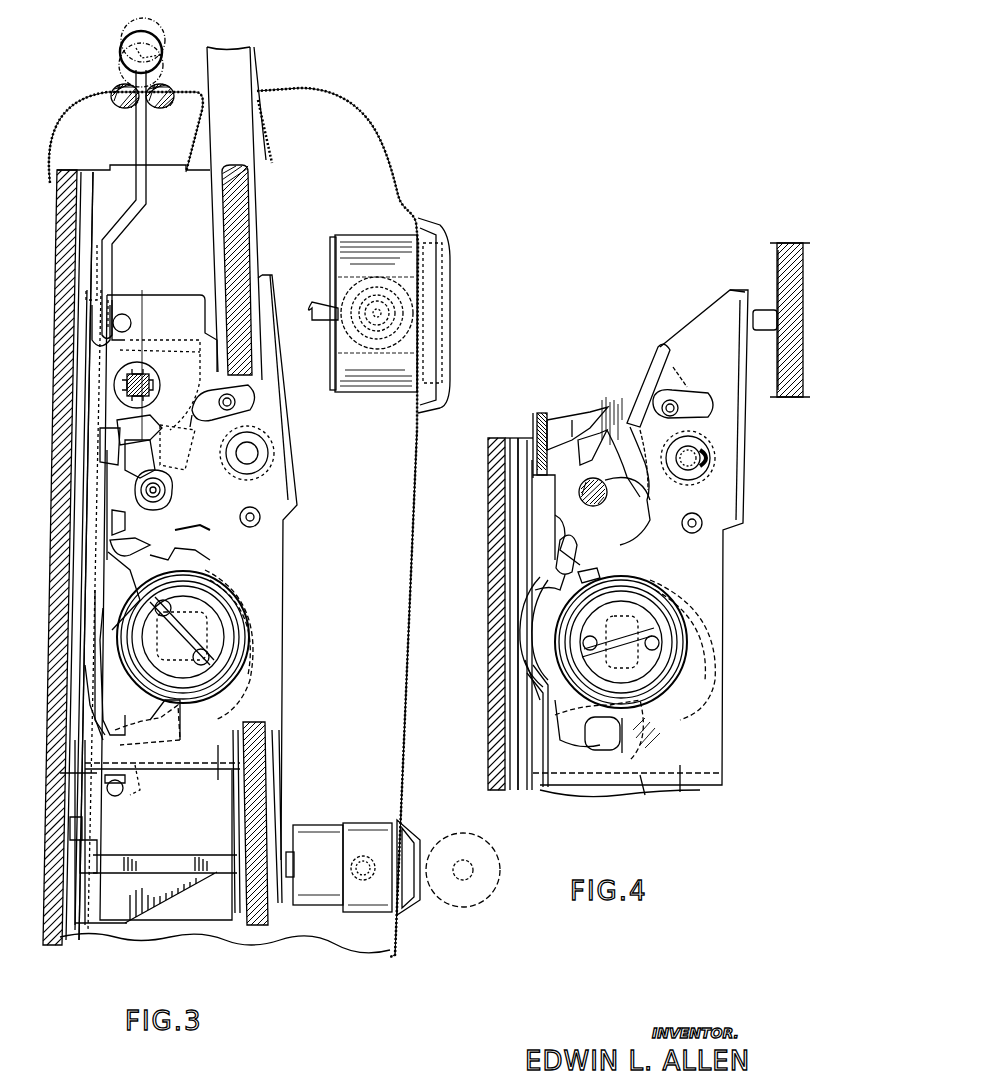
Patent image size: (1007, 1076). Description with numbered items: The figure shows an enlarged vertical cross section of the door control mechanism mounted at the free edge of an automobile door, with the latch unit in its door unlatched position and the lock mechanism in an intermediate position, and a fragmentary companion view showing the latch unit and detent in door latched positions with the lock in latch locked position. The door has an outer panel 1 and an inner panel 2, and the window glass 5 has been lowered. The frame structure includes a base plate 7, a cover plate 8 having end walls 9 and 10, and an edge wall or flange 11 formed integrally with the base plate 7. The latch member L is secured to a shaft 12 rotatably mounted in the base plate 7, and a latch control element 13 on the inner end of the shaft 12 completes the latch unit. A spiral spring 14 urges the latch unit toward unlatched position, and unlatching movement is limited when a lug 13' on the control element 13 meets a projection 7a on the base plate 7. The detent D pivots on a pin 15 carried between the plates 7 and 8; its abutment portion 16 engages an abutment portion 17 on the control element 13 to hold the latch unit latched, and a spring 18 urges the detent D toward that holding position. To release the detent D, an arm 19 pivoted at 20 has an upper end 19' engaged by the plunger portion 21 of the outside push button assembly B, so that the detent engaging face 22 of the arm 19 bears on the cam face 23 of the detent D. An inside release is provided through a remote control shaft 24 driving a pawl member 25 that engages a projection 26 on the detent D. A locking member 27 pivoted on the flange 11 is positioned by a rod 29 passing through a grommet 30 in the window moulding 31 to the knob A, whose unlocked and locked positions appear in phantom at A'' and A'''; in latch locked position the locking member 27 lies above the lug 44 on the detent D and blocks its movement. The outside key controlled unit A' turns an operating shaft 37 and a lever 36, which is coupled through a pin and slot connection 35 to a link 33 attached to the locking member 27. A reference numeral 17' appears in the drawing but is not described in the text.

In FIG. 3, the outer panel 1 is at (410, 695).
In FIG. 3, the inner panel 2 is at (62, 197).
In FIG. 3, the window glass 5 is at (250, 190).
In FIG. 3, the base plate 7 is at (150, 788).
In FIG. 4, the base plate 7 is at (655, 368).
In FIG. 3, the projection 7a is at (147, 722).
In FIG. 4, the projection 7a is at (599, 730).
In FIG. 3, the cover plate 8 is at (213, 774).
In FIG. 4, the cover plate 8 is at (680, 795).
In FIG. 3, the end wall 9 is at (170, 335).
In FIG. 3, the end wall 10 is at (145, 782).
In FIG. 4, the end wall 10 is at (658, 793).
In FIG. 3, the edge wall or flange 11 is at (80, 560).
In FIG. 4, the edge wall or flange 11 is at (520, 557).
In FIG. 3, the shaft 12 is at (196, 622).
In FIG. 4, the shaft 12 is at (630, 630).
In FIG. 3, the latch control element 13 is at (128, 628).
In FIG. 4, the latch control element 13 is at (566, 689).
In FIG. 3, the lug 13' is at (240, 645).
In FIG. 4, the lug 13' is at (695, 664).
In FIG. 3, the spiral spring 14 is at (180, 549).
In FIG. 4, the spiral spring 14 is at (539, 632).
In FIG. 3, the pin 15 is at (140, 490).
In FIG. 4, the pin 15 is at (579, 490).
In FIG. 3, the abutment portion 16 is at (143, 560).
In FIG. 4, the abutment portion 16 is at (578, 546).
In FIG. 3, the abutment portion 17 is at (188, 632).
In FIG. 4, the abutment portion 17 is at (621, 630).
In FIG. 3, the disc arm 17' is at (130, 535).
In FIG. 4, the disc arm 17' is at (513, 588).
In FIG. 3, the spring 18 is at (88, 686).
In FIG. 4, the spring 18 is at (527, 726).
In FIG. 3, the arm 19 is at (213, 597).
In FIG. 4, the arm 19 is at (658, 537).
In FIG. 3, the upper end of control arm 19' is at (281, 262).
In FIG. 4, the upper end of control arm 19' is at (745, 273).
In FIG. 3, the pivotal support 20 is at (262, 522).
In FIG. 4, the pivotal support 20 is at (720, 535).
In FIG. 3, the plunger portion 21 is at (312, 325).
In FIG. 4, the plunger portion 21 is at (763, 332).
In FIG. 3, the detent engaging face 22 is at (240, 474).
In FIG. 4, the detent engaging face 22 is at (660, 530).
In FIG. 3, the cam face 23 is at (190, 528).
In FIG. 4, the cam face 23 is at (640, 502).
In FIG. 3, the remote control shaft 24 is at (150, 372).
In FIG. 3, the pawl member 25 is at (117, 410).
In FIG. 4, the pawl member 25 is at (568, 418).
In FIG. 3, the projection 26 is at (135, 445).
In FIG. 4, the projection 26 is at (590, 433).
In FIG. 3, the locking or restraining member 27 is at (102, 436).
In FIG. 4, the locking or restraining member 27 is at (548, 420).
In FIG. 3, the rod 29 is at (110, 275).
In FIG. 3, the grommet 30 is at (112, 88).
In FIG. 3, the window moulding 31 is at (48, 150).
In FIG. 3, the link 33 is at (110, 780).
In FIG. 4, the link 33 is at (545, 790).
In FIG. 3, the pin and slot connection 35 is at (103, 860).
In FIG. 3, the lever 36 is at (100, 850).
In FIG. 3, the operating shaft 37 is at (172, 865).
In FIG. 3, the lug 44 is at (107, 470).
In FIG. 4, the lug 44 is at (545, 497).
In FIG. 3, the lock actuating knob A is at (123, 185).
In FIG. 3, the outside key controlled actuating unit A' is at (393, 855).
In FIG. 3, the uppermost unlocked position of knob A'' is at (158, 32).
In FIG. 3, the latch locked position of knob A''' is at (159, 65).
In FIG. 3, the push button assembly B is at (452, 305).
In FIG. 3, the detent D is at (112, 518).
In FIG. 4, the detent D is at (560, 525).
In FIG. 3, the latch member L is at (95, 606).
In FIG. 4, the latch member L is at (574, 719).